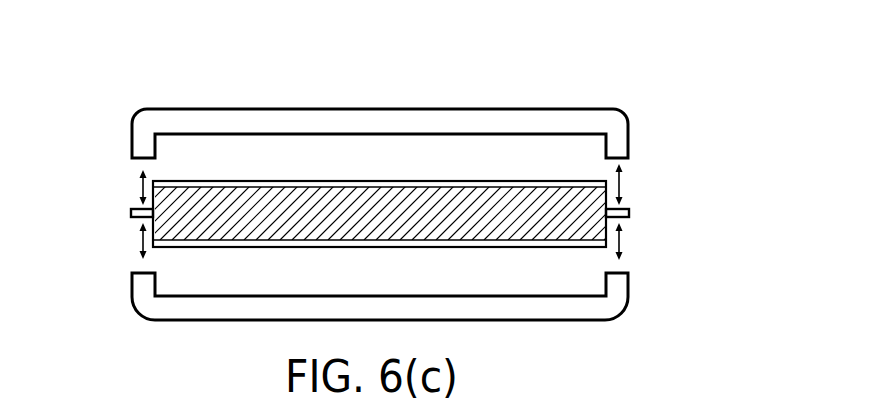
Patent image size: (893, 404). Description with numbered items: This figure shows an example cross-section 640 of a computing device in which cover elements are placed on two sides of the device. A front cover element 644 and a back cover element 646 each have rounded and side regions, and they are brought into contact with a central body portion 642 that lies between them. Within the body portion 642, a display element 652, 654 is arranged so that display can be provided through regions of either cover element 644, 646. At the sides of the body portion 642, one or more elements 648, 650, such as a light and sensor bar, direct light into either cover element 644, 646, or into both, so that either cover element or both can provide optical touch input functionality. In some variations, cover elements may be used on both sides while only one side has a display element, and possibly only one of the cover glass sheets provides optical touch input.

The cross-section 640 is at (707, 141).
The body portion 642 is at (378, 200).
The front cover element 644 is at (254, 109).
The back cover element 646 is at (206, 320).
The light and sensor bar element 648 is at (629, 213).
The light and sensor bar element 650 is at (131, 213).
The display element 652 is at (480, 186).
The display element 654 is at (530, 243).